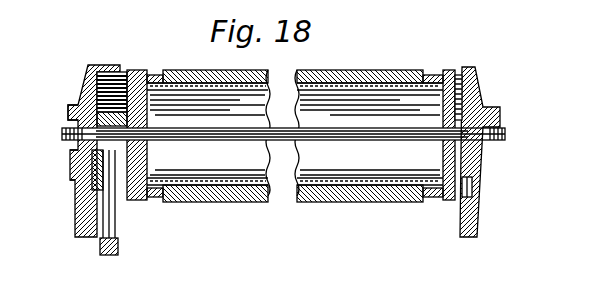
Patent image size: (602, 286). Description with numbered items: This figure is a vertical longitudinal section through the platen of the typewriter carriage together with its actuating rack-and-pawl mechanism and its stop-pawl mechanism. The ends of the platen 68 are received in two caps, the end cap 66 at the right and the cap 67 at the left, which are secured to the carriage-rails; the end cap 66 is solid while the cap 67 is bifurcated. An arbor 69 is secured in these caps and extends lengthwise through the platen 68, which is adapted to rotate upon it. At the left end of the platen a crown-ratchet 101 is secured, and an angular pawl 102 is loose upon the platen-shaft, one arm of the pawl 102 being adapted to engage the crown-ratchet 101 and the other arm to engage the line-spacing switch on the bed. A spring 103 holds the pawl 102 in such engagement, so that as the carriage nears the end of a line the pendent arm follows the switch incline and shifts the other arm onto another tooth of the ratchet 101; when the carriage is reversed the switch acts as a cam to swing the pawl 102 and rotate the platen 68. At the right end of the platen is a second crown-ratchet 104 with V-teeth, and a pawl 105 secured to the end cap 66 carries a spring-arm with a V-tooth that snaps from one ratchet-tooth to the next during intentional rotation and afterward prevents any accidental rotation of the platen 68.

The end cap 66 is at (483, 144).
The cap 67 is at (94, 139).
The platen 68 is at (295, 107).
The arbor 69 is at (295, 162).
The crown-ratchet 101 is at (126, 190).
The angular pawl 102 is at (128, 244).
The spring 103 is at (97, 97).
The crown-ratchet 104 is at (470, 92).
The pawl 105 is at (472, 190).